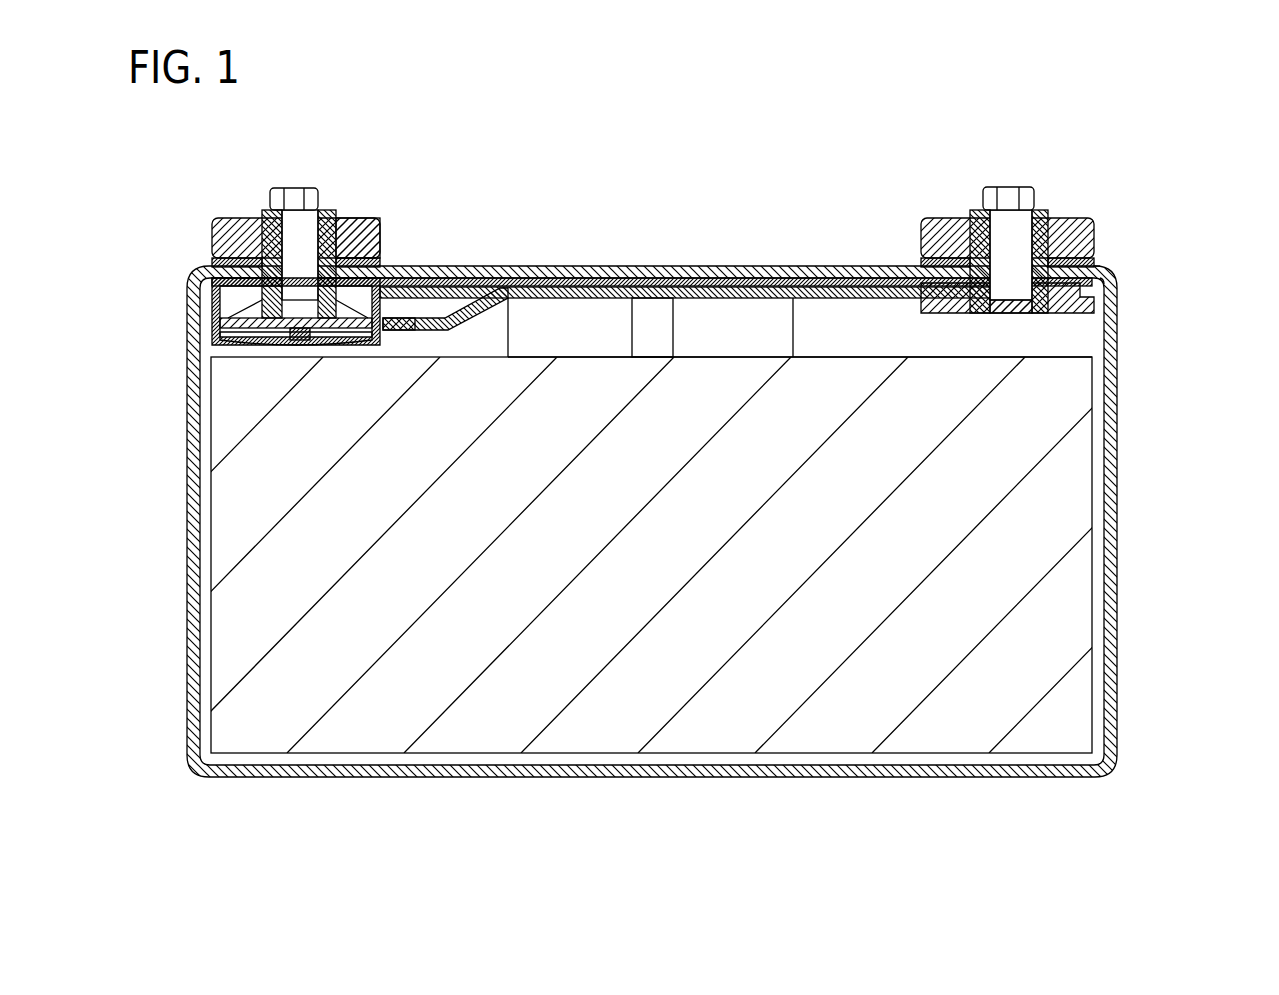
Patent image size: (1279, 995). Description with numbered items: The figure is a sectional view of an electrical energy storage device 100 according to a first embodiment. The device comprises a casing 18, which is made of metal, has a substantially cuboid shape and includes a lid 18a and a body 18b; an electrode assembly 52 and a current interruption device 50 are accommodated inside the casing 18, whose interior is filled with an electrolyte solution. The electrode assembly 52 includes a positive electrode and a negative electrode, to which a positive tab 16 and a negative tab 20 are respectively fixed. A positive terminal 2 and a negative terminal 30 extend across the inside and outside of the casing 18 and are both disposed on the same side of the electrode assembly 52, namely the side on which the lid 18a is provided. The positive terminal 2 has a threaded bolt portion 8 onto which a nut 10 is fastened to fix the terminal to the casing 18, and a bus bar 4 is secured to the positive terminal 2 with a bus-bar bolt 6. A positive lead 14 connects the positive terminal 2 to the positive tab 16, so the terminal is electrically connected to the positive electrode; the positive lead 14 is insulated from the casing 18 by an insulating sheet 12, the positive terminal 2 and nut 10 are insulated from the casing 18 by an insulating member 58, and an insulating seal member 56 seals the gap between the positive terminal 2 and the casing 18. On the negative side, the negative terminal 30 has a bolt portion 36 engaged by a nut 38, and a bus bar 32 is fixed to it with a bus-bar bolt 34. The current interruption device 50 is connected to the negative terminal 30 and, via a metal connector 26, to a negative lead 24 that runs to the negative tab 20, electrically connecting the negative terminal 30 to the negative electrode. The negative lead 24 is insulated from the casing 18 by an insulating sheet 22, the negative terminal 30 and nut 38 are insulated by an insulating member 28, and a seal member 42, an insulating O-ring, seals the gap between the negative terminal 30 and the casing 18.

The electrical energy storage device 100 is at (1138, 157).
The positive terminal 2 is at (1050, 215).
The bus bar 4 is at (1040, 210).
The bus-bar bolt 6 is at (1007, 187).
The bolt portion 8 is at (975, 215).
The nut 10 is at (935, 218).
The insulating sheet 12 is at (817, 280).
The positive lead 14 is at (780, 292).
The positive tab 16 is at (715, 313).
The casing 18 is at (724, 488).
The lid 18a is at (662, 267).
The body 18b is at (1112, 522).
The negative tab 20 is at (580, 315).
The insulating sheet 22 is at (540, 290).
The negative lead 24 is at (480, 295).
The connector 26 is at (397, 317).
The insulating member 28 is at (372, 230).
The negative terminal 30 is at (340, 216).
The bus bar 32 is at (332, 210).
The bus-bar bolt 34 is at (292, 188).
The bolt portion 36 is at (262, 215).
The nut 38 is at (226, 218).
The seal member 42 is at (212, 300).
The current interruption device 50 is at (240, 345).
The electrode assembly 52 is at (1058, 610).
The seal member 56 is at (1103, 283).
The insulating member 58 is at (1097, 265).